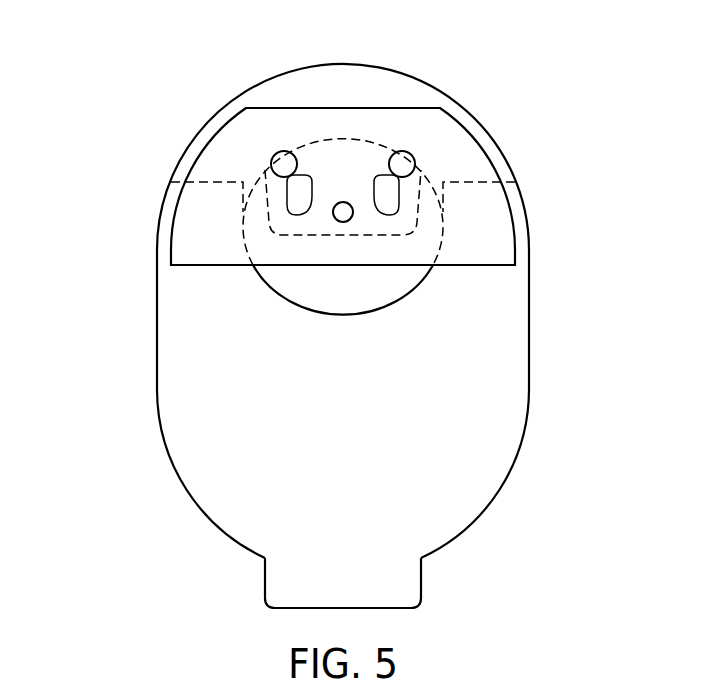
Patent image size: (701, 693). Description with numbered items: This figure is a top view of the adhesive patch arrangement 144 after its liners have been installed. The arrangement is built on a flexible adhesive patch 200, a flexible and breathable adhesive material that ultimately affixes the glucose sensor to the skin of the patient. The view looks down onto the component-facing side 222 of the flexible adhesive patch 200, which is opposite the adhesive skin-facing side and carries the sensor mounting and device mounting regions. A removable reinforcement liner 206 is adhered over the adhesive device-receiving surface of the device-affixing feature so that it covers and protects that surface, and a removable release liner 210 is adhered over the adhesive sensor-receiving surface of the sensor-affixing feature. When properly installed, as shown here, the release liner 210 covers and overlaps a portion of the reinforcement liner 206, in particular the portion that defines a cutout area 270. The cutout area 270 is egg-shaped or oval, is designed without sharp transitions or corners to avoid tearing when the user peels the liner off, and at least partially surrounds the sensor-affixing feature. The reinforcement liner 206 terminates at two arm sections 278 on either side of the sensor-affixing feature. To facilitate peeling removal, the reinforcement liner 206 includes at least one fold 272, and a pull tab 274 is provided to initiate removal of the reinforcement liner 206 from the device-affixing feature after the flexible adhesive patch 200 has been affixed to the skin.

The adhesive patch arrangement 144 is at (106, 92).
The flexible adhesive patch 200 is at (283, 86).
The component-facing side 222 is at (372, 82).
The removable release liner 210 is at (434, 108).
The fold 272 is at (190, 182).
The arm sections 278 is at (157, 246).
The removable reinforcement liner 206 is at (197, 362).
The cutout area 270 is at (378, 290).
The pull tab 274 is at (421, 580).